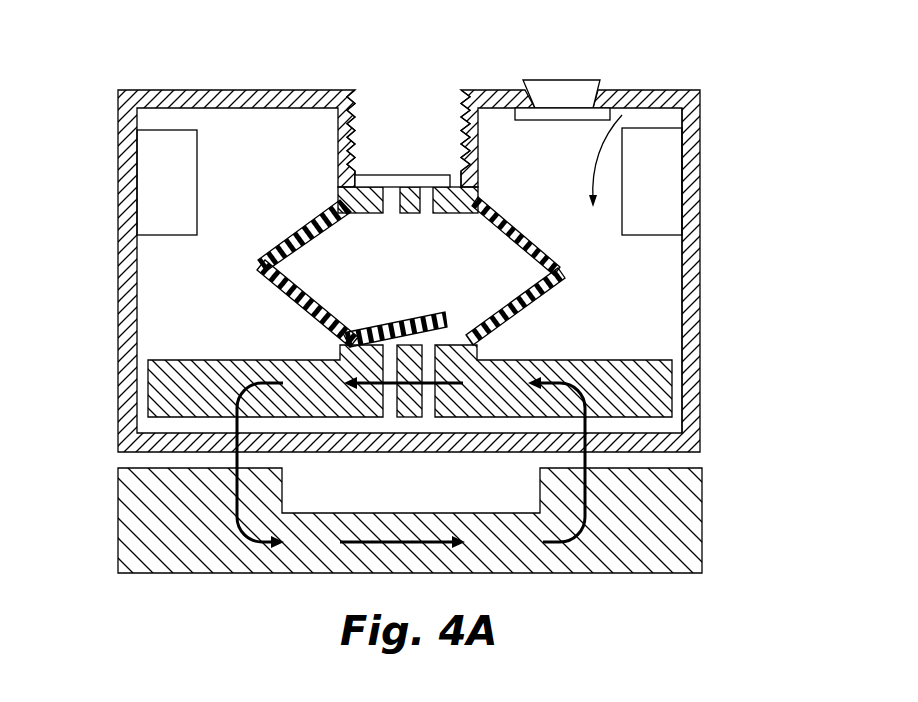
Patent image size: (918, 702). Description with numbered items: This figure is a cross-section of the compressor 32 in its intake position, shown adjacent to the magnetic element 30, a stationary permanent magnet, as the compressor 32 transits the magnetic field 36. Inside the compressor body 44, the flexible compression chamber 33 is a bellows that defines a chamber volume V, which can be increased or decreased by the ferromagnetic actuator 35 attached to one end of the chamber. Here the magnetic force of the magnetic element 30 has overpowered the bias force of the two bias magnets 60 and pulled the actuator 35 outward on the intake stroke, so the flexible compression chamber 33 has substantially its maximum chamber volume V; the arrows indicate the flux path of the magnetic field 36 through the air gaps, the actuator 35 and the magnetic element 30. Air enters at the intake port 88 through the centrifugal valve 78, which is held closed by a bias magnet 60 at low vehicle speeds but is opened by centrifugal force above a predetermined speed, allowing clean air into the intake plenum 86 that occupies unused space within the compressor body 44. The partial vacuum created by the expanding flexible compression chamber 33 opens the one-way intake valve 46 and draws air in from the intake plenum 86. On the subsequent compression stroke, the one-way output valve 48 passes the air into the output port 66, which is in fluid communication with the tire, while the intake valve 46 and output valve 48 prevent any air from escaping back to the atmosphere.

The magnetic element 30 is at (673, 517).
The compressor 32 is at (656, 84).
The flexible compression chamber 33 is at (562, 270).
The actuator 35 is at (655, 375).
The magnetic field 36 is at (230, 495).
The compressor body 44 is at (692, 328).
The intake valve 46 is at (403, 318).
The output valve 48 is at (422, 170).
The bias magnet 60 is at (162, 170).
The output port 66 is at (380, 105).
The centrifugal valve 78 is at (560, 92).
The intake plenum 86 is at (503, 147).
The intake port 88 is at (598, 92).
The chamber volume V is at (404, 276).